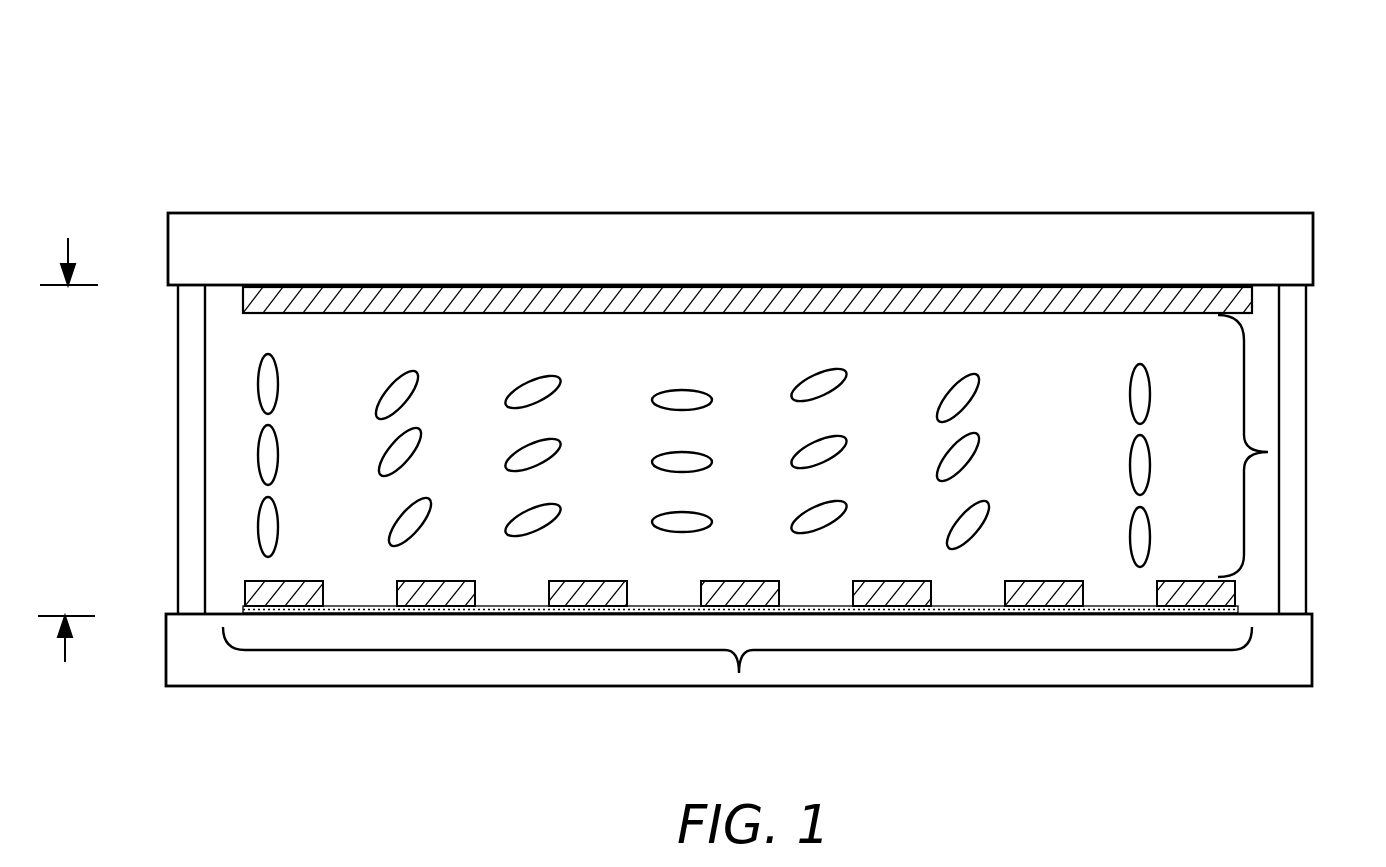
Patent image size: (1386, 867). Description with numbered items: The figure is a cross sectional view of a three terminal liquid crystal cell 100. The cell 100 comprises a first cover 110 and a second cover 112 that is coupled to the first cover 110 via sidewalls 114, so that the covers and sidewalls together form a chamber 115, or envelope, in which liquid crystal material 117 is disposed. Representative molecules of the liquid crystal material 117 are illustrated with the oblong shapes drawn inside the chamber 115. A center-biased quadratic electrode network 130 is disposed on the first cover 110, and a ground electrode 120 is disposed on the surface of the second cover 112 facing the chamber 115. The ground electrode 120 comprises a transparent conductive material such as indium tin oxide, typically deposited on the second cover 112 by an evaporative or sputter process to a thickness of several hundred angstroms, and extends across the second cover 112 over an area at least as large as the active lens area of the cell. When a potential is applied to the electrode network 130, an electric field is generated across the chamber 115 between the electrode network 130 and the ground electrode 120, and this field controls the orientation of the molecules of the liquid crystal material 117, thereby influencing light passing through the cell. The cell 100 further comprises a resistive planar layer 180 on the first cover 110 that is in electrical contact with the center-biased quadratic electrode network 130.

The three terminal liquid crystal cell 100 is at (265, 79).
The first cover 110 is at (372, 687).
The second cover 112 is at (680, 213).
The sidewalls 114 is at (178, 585).
The chamber 115 is at (1280, 450).
The liquid crystal material 117 is at (812, 440).
The ground electrode 120 is at (1178, 291).
The center-biased quadratic electrode network 130 is at (737, 654).
The resistive planar layer 180 is at (960, 612).